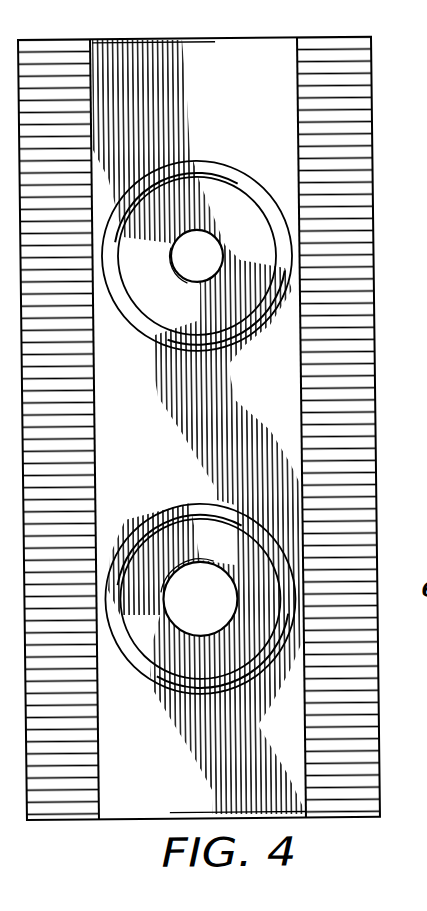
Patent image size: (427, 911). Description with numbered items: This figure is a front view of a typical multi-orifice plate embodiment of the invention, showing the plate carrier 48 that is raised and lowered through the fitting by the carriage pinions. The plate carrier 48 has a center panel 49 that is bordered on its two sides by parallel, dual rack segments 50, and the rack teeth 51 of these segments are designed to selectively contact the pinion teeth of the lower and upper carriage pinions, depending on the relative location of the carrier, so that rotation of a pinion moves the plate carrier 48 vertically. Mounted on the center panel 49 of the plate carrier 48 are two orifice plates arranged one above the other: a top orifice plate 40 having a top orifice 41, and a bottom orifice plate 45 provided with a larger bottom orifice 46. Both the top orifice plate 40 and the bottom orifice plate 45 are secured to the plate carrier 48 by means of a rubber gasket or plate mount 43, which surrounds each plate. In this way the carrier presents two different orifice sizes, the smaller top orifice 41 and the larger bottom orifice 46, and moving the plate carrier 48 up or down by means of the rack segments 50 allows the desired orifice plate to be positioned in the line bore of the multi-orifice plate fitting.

The plate carrier 48 is at (238, 30).
The center panel 49 is at (213, 102).
The rack segments 50 is at (46, 64).
The rack teeth 51 is at (92, 53).
The top orifice plate 40 is at (236, 177).
The top orifice 41 is at (210, 244).
The plate mount 43 is at (199, 340).
The bottom orifice plate 45 is at (256, 524).
The bottom orifice 46 is at (188, 574).